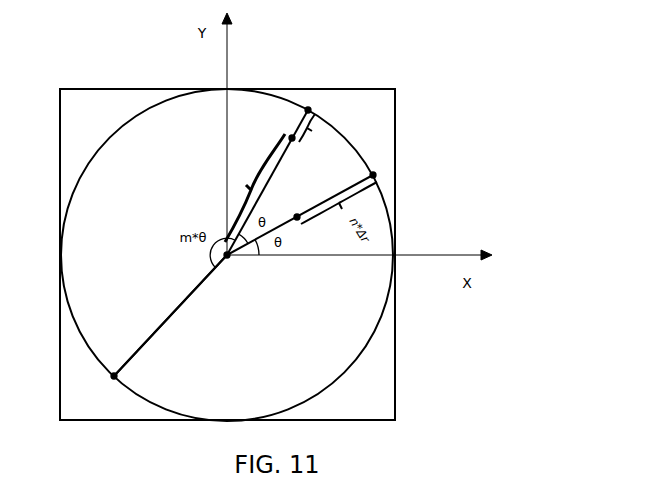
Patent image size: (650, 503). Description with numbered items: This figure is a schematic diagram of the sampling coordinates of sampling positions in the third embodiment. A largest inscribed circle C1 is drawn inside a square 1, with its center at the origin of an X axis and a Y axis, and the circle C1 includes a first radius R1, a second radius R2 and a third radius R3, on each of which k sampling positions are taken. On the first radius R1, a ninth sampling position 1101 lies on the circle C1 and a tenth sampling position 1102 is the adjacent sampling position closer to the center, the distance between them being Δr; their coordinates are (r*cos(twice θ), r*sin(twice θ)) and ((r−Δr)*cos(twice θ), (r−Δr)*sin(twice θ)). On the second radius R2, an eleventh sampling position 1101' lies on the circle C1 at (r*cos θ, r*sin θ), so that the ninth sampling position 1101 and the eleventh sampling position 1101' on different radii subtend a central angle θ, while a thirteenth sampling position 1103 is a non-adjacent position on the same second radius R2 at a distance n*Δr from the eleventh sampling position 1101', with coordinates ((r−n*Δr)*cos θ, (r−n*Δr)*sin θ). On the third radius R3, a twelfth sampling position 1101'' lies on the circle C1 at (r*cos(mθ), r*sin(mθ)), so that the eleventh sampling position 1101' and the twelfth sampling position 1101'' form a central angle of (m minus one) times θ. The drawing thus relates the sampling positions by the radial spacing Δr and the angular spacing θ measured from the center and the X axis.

The square region / display area 1 is at (377, 388).
The largest inscribed circle C1 is at (385, 200).
The ninth sampling position 1101 is at (295, 70).
The eleventh sampling position 1101' is at (418, 123).
The twelfth sampling position 1101'' is at (186, 378).
The tenth sampling position 1102 is at (292, 138).
The thirteenth sampling position 1103 is at (297, 217).
The first radius R1 is at (247, 178).
The second radius R2 is at (356, 172).
The third radius R3 is at (193, 292).